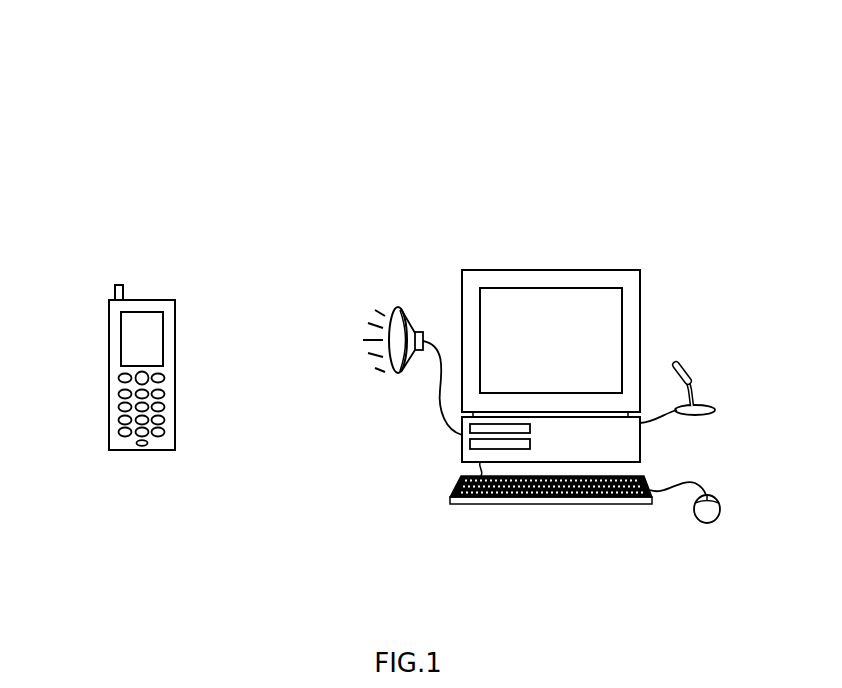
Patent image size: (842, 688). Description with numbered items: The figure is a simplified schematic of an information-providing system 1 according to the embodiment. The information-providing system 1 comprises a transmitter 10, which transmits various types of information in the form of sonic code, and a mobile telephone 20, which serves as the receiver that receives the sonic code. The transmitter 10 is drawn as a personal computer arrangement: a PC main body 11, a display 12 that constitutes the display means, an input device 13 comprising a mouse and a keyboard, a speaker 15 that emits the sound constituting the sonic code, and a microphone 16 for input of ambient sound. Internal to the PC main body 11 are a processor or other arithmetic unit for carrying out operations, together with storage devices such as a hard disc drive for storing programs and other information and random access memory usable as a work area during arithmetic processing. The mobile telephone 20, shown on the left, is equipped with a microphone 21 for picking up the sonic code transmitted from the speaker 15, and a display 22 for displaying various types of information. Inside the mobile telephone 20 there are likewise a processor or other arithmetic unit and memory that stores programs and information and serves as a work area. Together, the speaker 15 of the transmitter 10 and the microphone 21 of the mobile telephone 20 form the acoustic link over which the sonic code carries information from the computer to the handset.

The information-providing system 1 is at (414, 102).
The transmitter 10 is at (590, 270).
The personal computer (PC) main body 11 is at (640, 443).
The display 12 is at (640, 293).
The input device 13 is at (583, 505).
The speaker 15 is at (397, 375).
The microphone 16 is at (692, 375).
The mobile telephone 20 is at (152, 300).
The microphone 21 is at (142, 448).
The display 22 is at (127, 338).